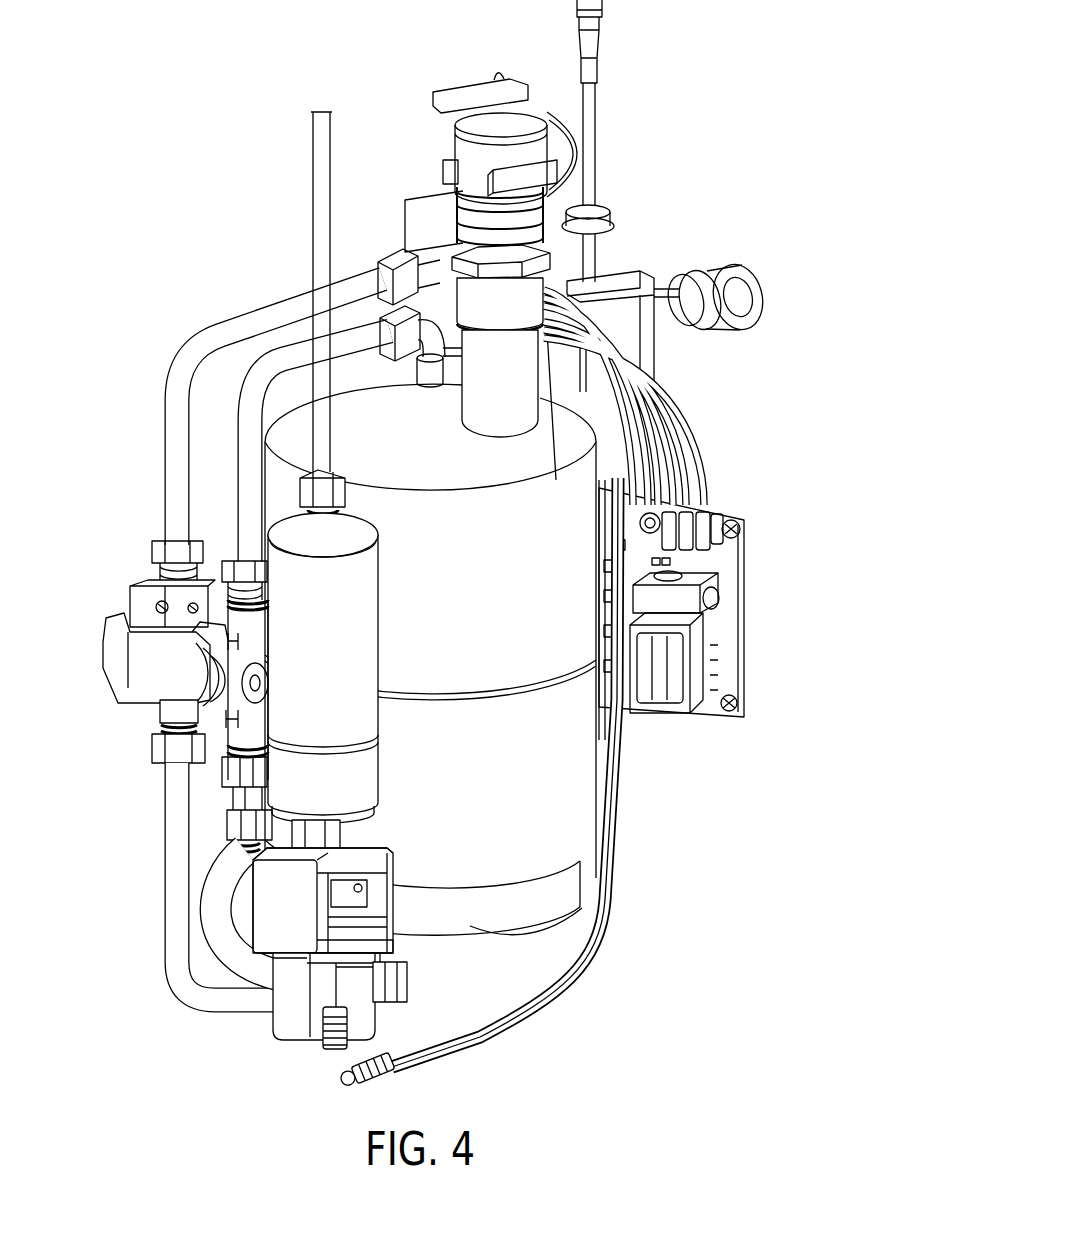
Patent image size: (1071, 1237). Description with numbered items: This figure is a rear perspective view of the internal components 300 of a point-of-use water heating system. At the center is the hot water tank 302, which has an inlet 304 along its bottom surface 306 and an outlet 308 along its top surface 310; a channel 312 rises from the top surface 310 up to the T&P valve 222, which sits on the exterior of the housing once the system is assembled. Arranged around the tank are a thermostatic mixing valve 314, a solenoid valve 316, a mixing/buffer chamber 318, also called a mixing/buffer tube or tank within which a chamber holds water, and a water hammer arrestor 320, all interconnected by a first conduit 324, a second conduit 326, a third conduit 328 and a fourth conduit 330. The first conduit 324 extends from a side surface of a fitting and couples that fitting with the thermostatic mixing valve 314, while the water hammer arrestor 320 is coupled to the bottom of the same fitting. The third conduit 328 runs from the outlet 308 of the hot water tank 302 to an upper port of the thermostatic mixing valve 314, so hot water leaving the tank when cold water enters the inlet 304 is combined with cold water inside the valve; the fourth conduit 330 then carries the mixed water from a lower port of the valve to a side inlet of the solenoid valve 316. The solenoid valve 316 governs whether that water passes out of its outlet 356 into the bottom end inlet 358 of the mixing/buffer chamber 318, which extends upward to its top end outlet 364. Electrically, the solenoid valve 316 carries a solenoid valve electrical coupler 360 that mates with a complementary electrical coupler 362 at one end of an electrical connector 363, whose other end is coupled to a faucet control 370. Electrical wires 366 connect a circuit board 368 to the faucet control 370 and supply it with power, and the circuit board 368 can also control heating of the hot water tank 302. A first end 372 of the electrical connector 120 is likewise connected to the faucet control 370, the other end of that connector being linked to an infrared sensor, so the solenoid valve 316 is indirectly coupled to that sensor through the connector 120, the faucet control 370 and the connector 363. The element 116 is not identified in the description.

The tube 116 is at (315, 198).
The electrical connector 120 is at (598, 153).
The T&P valve 222 is at (441, 146).
The internal components 300 is at (460, 562).
The hot water tank 302 is at (510, 601).
The inlet 304 is at (449, 937).
The bottom surface 306 is at (553, 890).
The outlet 308 is at (433, 387).
The top surface 310 is at (420, 421).
The channel 312 is at (526, 378).
The thermostatic mixing valve 314 is at (123, 709).
The solenoid valve 316 is at (248, 922).
The mixing/buffer chamber 318 is at (349, 648).
The water hammer arrestor 320 is at (547, 940).
The first conduit 324 is at (256, 310).
The second conduit 326 is at (168, 847).
The third conduit 328 is at (243, 458).
The fourth conduit 330 is at (232, 862).
The outlet 356 is at (354, 838).
The bottom end inlet 358 is at (364, 823).
The solenoid valve electrical coupler 360 is at (321, 1058).
The complementary electrical coupler 362 is at (347, 1080).
The electrical connector 363 is at (508, 1025).
The top end outlet 364 is at (343, 464).
The electrical wires 366 is at (705, 423).
The circuit board 368 is at (752, 514).
The faucet control 370 is at (665, 323).
The first end 372 is at (599, 268).